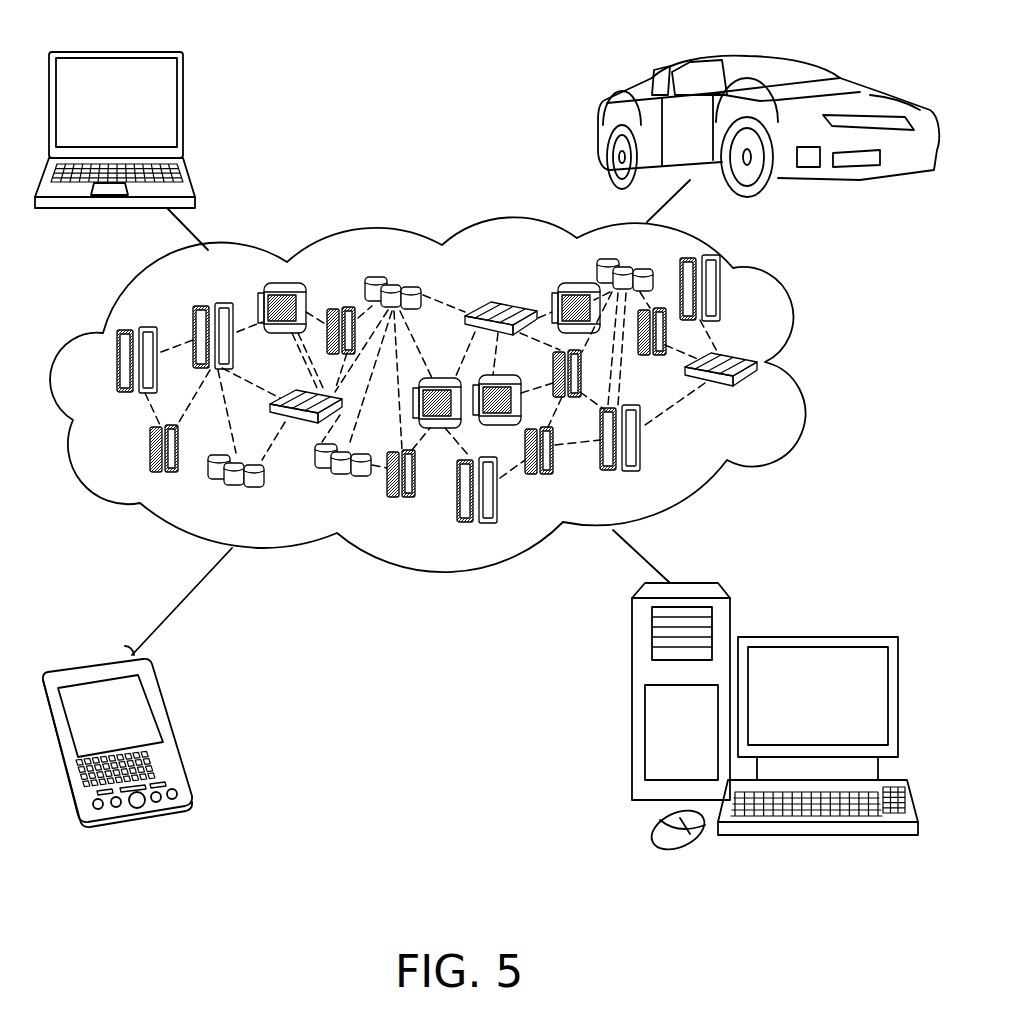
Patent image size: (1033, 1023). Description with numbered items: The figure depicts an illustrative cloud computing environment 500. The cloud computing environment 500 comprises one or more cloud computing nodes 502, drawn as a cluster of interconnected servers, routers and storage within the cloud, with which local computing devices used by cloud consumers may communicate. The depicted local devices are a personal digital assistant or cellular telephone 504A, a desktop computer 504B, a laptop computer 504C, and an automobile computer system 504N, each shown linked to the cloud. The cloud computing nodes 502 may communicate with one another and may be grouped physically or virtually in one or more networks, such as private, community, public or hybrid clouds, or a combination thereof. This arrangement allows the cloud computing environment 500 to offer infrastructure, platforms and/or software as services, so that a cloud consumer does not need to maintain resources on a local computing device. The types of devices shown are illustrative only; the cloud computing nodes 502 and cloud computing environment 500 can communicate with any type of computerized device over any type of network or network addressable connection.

The cloud computing environment 500 is at (795, 350).
The cloud computing nodes 502 is at (762, 398).
The personal digital assistant (PDA) or cellular telephone 504A is at (160, 697).
The desktop computer 504B is at (803, 637).
The laptop computer 504C is at (182, 93).
The automobile computer system 504N is at (603, 128).